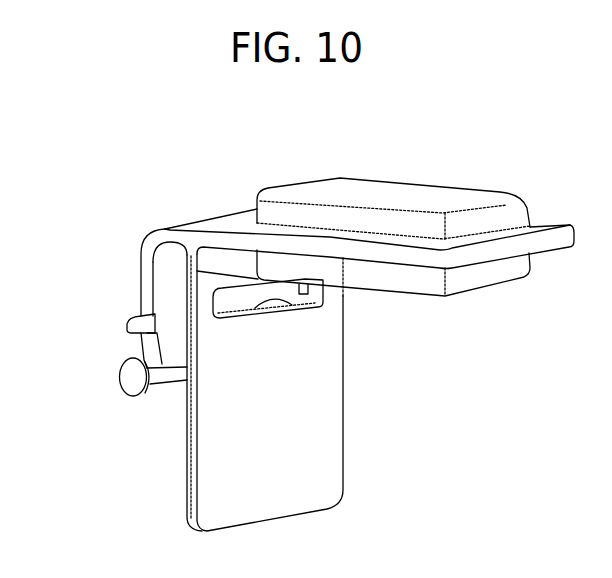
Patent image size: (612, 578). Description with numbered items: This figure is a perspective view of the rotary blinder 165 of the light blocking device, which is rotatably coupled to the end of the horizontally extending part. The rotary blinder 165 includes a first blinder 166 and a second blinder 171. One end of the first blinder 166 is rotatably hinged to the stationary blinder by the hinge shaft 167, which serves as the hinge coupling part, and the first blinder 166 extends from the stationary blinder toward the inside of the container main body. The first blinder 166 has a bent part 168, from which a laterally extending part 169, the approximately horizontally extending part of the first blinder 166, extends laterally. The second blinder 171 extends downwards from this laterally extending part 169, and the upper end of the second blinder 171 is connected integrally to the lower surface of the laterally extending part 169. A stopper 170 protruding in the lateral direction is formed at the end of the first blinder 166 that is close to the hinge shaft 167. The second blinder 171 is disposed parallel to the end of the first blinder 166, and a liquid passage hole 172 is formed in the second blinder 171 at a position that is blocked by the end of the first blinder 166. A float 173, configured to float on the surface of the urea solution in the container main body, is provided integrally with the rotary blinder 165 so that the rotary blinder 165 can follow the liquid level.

The rotary blinder 165 is at (422, 373).
The first blinder 166 is at (168, 113).
The hinge shaft 167 is at (163, 377).
The bent part 168 is at (141, 272).
The laterally extending part 169 is at (215, 218).
The stopper 170 is at (127, 323).
The second blinder 171 is at (303, 458).
The liquid passage hole 172 is at (292, 305).
The float 173 is at (397, 182).